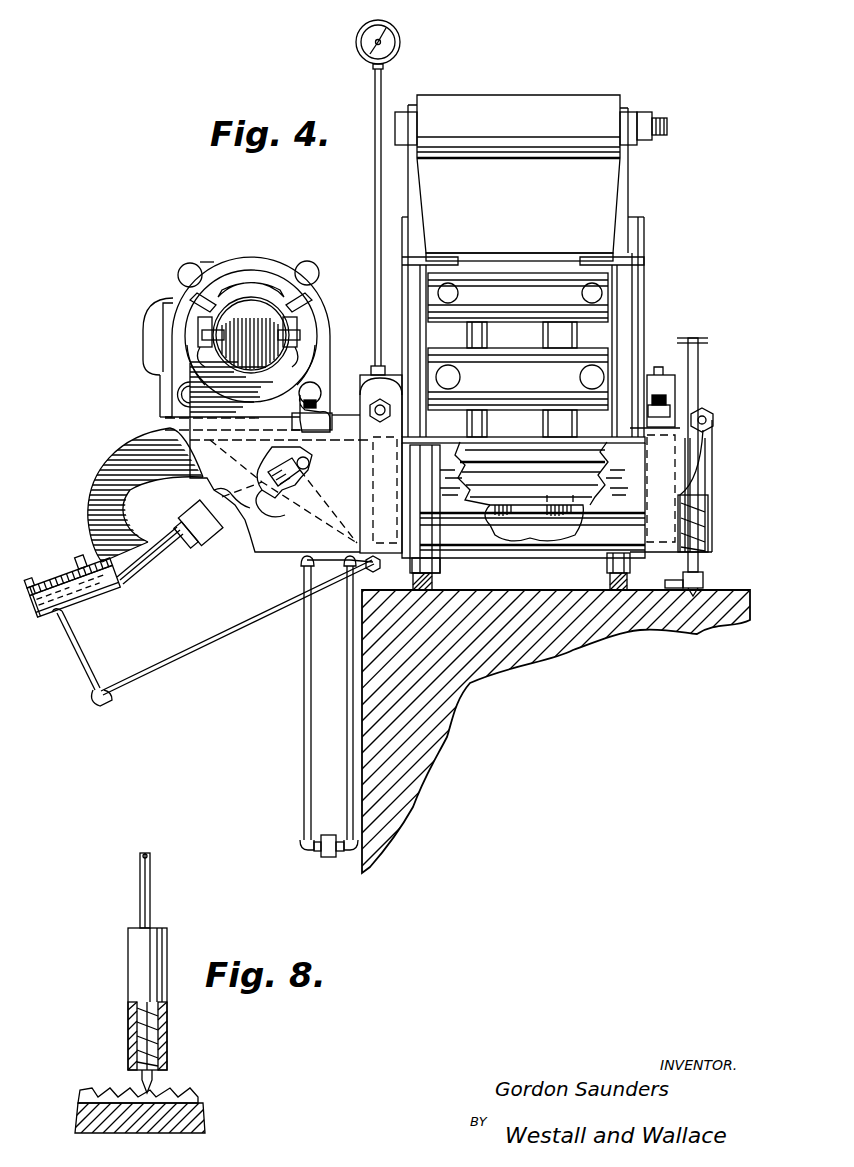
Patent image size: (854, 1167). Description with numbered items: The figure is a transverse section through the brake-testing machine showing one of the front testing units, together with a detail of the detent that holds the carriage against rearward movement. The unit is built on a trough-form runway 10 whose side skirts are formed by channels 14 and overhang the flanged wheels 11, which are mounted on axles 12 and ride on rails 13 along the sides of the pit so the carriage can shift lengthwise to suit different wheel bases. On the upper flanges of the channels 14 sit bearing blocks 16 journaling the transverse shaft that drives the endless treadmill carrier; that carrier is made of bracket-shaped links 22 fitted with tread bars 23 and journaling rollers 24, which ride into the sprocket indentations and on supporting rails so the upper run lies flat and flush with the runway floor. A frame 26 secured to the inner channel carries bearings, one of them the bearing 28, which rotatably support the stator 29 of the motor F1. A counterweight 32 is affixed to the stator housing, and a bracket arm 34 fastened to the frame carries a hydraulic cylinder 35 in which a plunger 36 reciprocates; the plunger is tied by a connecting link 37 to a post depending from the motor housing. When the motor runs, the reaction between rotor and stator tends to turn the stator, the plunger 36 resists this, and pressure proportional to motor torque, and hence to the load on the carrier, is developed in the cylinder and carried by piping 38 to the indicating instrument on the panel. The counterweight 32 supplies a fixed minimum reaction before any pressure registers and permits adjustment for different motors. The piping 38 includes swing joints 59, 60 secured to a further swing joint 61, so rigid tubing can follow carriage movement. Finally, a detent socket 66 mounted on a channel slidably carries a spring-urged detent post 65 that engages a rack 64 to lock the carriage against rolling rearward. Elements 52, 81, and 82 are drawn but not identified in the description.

In FIG. 4, the runway 10 is at (405, 230).
In FIG. 4, the wheels 11 is at (440, 570).
In FIG. 4, the axles 12 is at (600, 492).
In FIG. 4, the rails 13 is at (432, 583).
In FIG. 4, the channels 14 is at (373, 480).
In FIG. 4, the bearing blocks 16 is at (362, 385).
In FIG. 4, the links 22 is at (598, 325).
In FIG. 4, the tread bars 23 is at (525, 262).
In FIG. 4, the rollers 24 is at (560, 423).
In FIG. 4, the frame 26 is at (300, 558).
In FIG. 4, the bearing 28 is at (223, 360).
In FIG. 4, the stator 29 is at (262, 256).
In FIG. 4, the counterweight 32 is at (150, 322).
In FIG. 4, the bracket arm 34 is at (118, 458).
In FIG. 4, the hydraulic cylinder 35 is at (80, 560).
In FIG. 4, the plunger 36 is at (222, 532).
In FIG. 4, the connecting link 37 is at (284, 491).
In FIG. 4, the piping 38 is at (214, 648).
In FIG. 4, the cylinder 52 is at (610, 105).
In FIG. 4, the swing joint 59 is at (303, 590).
In FIG. 4, the swing joint 60 is at (326, 832).
In FIG. 4, the swing joint 61 is at (344, 580).
In FIG. 4, the rack 64 is at (710, 582).
In FIG. 8, the rack 64 is at (180, 1086).
In FIG. 4, the detent post 65 is at (698, 352).
In FIG. 8, the detent post 65 is at (150, 883).
In FIG. 8, the detent socket 66 is at (128, 966).
In FIG. 4, the gauge pipe 81 is at (378, 305).
In FIG. 4, the press unit 82 is at (652, 215).
In FIG. 4, the motor F1 is at (205, 262).